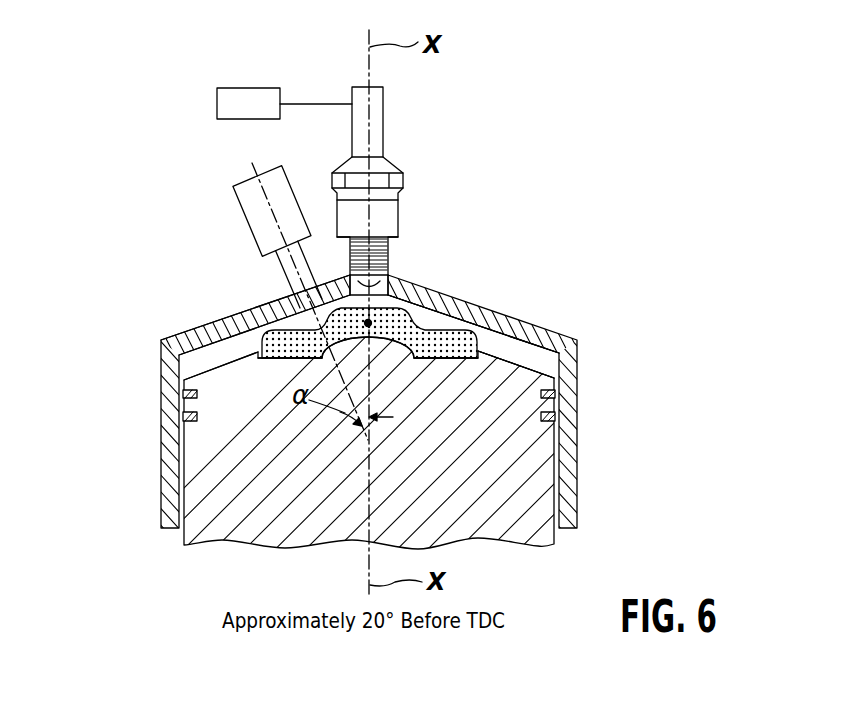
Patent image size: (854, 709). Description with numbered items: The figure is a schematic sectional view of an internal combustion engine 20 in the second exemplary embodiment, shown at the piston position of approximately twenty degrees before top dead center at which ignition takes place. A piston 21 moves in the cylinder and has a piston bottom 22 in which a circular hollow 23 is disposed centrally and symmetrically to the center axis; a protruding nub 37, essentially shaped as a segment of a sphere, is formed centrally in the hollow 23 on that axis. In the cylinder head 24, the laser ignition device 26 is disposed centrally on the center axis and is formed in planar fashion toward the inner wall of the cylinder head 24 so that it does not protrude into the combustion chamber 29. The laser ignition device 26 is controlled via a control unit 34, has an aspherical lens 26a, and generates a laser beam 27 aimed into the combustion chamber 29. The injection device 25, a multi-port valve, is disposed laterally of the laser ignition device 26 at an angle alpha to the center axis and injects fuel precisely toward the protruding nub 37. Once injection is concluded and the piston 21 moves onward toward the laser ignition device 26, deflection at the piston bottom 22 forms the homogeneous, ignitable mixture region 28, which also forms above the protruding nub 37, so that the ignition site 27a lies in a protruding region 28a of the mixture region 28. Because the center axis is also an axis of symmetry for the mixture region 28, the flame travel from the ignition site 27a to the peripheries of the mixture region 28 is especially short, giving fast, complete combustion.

The internal combustion engine 20 is at (118, 300).
The piston 21 is at (537, 455).
The piston bottom 22 is at (537, 362).
The circular hollow 23 is at (448, 360).
The cylinder head 24 is at (212, 322).
The injection device 25 is at (240, 214).
The laser ignition device 26 is at (383, 123).
The aspherical lens 26a is at (348, 272).
The laser beam 27 is at (412, 275).
The ignition site 27a is at (455, 317).
The mixture region 28 is at (516, 348).
The protruding region 28a is at (410, 312).
The combustion chamber 29 is at (533, 327).
The control unit 34 is at (248, 88).
The protruding nub 37 is at (246, 312).